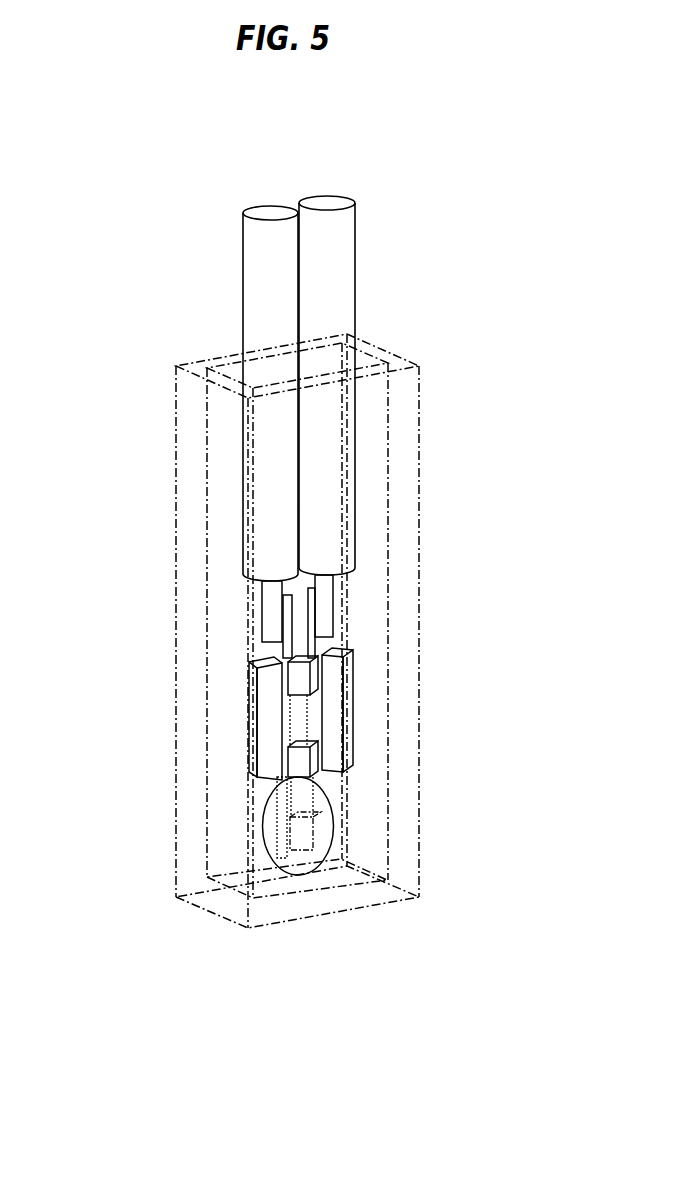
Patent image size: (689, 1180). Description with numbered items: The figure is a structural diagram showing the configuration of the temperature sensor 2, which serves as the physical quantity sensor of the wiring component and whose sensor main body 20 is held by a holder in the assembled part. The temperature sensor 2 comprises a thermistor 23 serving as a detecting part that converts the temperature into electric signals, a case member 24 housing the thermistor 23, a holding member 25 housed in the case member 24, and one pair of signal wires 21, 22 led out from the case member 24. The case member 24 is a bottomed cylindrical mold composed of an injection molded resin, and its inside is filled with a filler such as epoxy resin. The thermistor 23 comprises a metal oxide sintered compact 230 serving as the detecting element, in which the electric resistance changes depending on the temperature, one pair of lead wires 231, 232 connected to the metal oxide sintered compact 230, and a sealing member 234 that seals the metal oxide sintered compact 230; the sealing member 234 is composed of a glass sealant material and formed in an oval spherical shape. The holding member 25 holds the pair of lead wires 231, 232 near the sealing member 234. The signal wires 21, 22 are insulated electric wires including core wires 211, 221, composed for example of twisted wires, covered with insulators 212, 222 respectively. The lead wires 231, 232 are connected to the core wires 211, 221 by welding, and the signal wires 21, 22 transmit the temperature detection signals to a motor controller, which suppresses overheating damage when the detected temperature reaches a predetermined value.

The temperature sensor 2 is at (137, 238).
The sensor main body 20 is at (157, 428).
The signal wire 21 is at (328, 228).
The core wire 211 is at (327, 605).
The insulator 212 is at (340, 560).
The signal wire 22 is at (258, 237).
The core wire 221 is at (265, 608).
The insulator 222 is at (270, 567).
The thermistor 23 is at (303, 880).
The metal oxide sintered compact 230 is at (302, 838).
The lead wire 231 is at (310, 645).
The lead wire 232 is at (293, 655).
The sealing member 234 is at (281, 870).
The case member 24 is at (420, 757).
The holding member 25 is at (347, 677).